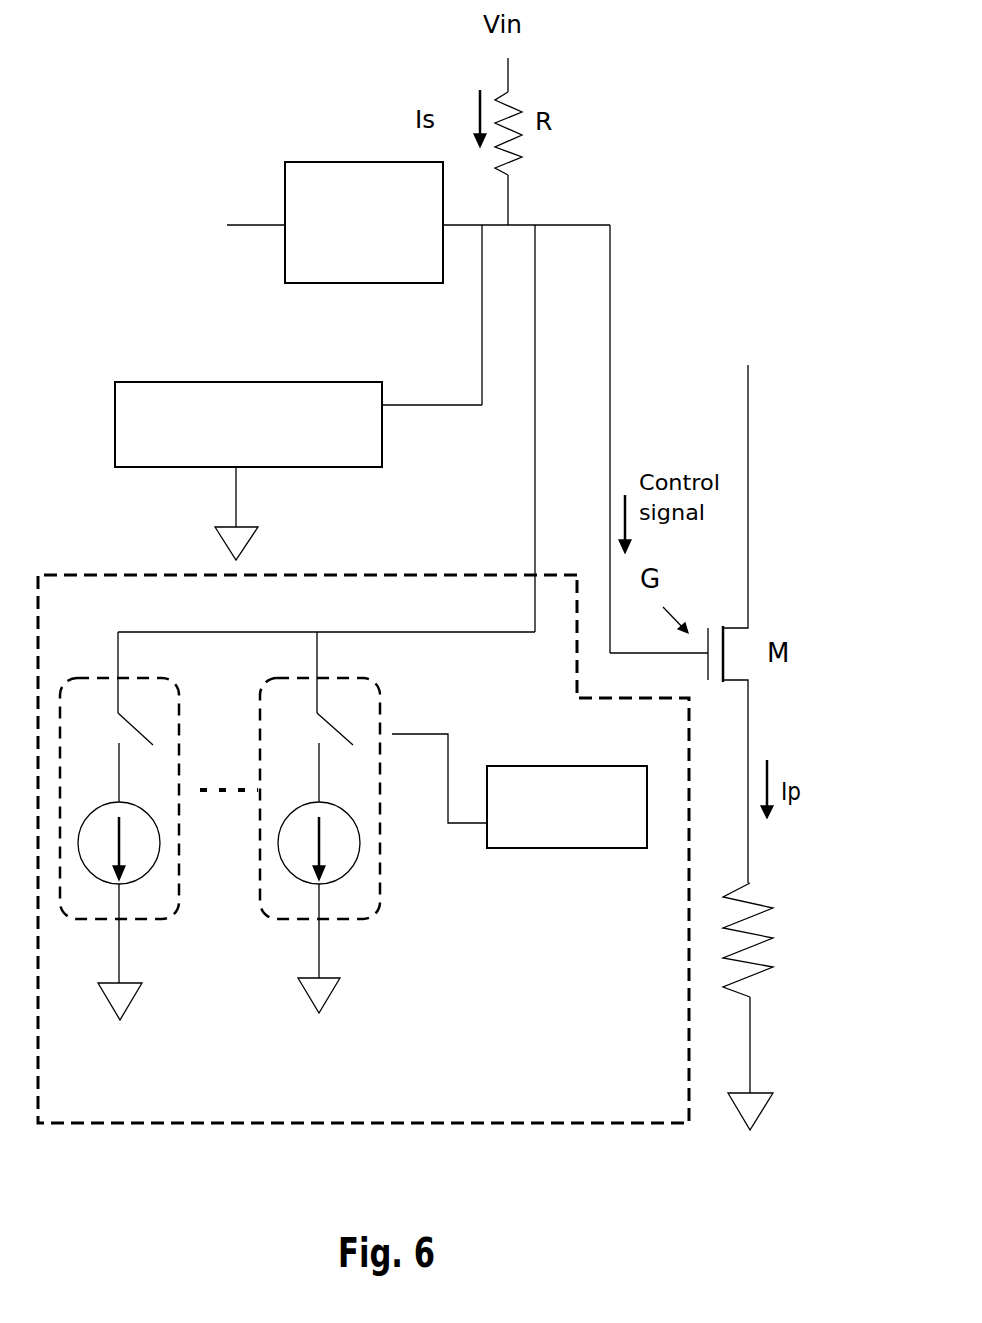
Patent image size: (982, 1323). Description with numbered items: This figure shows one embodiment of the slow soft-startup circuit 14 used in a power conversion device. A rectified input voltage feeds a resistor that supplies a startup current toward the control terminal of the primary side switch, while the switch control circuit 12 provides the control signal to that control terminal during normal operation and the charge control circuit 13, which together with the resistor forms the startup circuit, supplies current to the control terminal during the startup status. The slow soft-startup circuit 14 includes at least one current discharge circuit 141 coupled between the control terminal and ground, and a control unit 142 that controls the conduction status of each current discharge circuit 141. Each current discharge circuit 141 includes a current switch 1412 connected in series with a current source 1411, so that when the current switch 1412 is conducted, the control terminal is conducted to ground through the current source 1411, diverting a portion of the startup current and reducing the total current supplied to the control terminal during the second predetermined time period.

The switch control circuit 12 is at (420, 271).
The charge control circuit 13 is at (310, 458).
The slow soft-startup circuit 14 is at (661, 1103).
The current discharge circuit 141 is at (168, 912).
The current source 1411 is at (160, 863).
The current switch 1412 is at (160, 724).
The control unit 142 is at (550, 838).